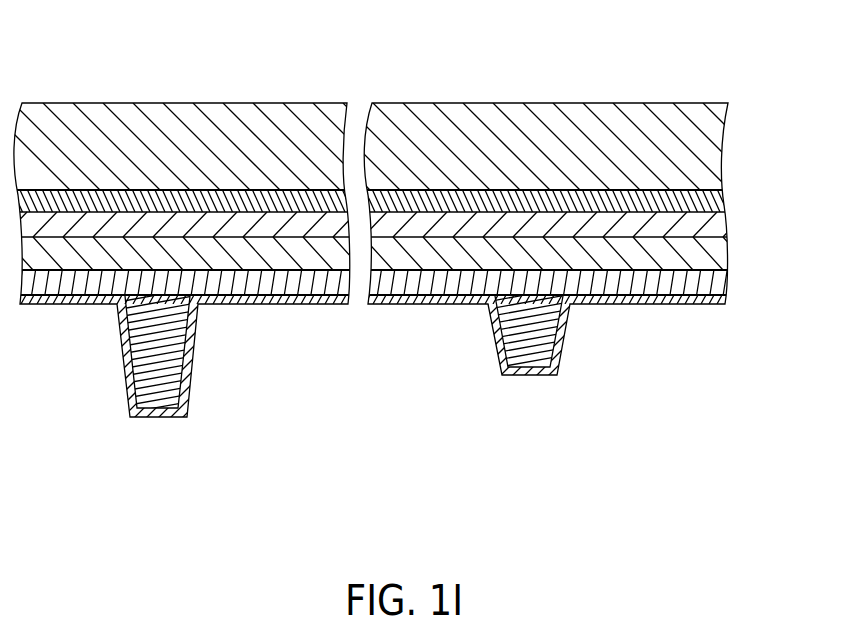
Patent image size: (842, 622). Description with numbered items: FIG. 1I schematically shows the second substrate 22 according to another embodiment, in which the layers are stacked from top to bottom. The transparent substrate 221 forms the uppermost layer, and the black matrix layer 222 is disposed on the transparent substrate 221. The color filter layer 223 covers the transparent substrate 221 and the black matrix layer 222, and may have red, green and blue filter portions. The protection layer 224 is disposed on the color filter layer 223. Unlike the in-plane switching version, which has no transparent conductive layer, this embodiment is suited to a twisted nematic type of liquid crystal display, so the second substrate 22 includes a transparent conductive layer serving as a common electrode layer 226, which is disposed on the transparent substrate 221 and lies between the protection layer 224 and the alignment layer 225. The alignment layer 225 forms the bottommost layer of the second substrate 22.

The second substrate 22 is at (108, 81).
The transparent substrate 221 is at (705, 150).
The black matrix layer 222 is at (714, 203).
The color filter layer 223 is at (722, 227).
The protection layer 224 is at (720, 250).
The alignment layer 225 is at (708, 305).
The common electrode layer 226 is at (714, 280).